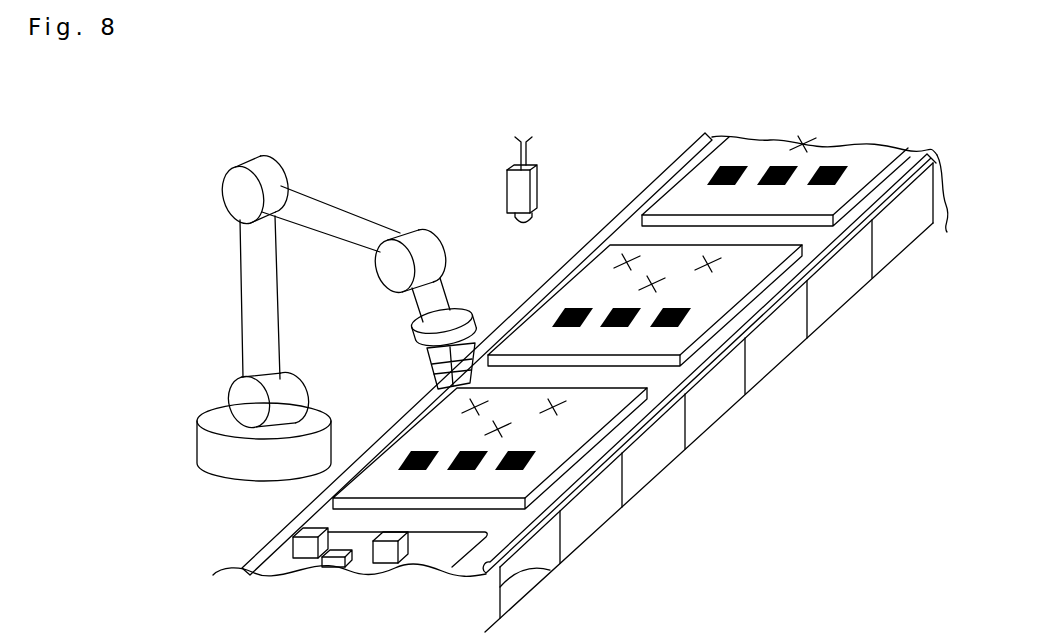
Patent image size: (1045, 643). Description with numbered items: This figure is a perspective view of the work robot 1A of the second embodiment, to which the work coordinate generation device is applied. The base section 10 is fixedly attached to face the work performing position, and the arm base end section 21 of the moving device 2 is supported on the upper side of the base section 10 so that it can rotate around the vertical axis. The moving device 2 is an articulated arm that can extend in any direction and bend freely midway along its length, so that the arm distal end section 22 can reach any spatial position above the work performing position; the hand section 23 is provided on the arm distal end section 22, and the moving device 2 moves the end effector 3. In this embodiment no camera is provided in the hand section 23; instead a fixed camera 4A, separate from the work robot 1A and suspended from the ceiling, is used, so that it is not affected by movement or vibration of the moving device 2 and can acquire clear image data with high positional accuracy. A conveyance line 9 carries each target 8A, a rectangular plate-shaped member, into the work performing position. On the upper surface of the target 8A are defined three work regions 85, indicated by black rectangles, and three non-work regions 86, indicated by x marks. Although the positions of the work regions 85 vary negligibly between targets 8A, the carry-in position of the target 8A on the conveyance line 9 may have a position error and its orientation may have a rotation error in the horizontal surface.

The work robot 1A is at (204, 146).
The moving device 2 is at (240, 298).
The end effector 3 is at (433, 360).
The fixed camera 4A is at (507, 190).
The conveyance line 9 is at (712, 407).
The base section 10 is at (203, 447).
The arm base end section 21 is at (236, 396).
The arm distal end section 22 is at (422, 260).
The hand section 23 is at (463, 328).
The work region 85 is at (672, 328).
The non-work region 86 is at (717, 263).
The target 8A is at (728, 292).